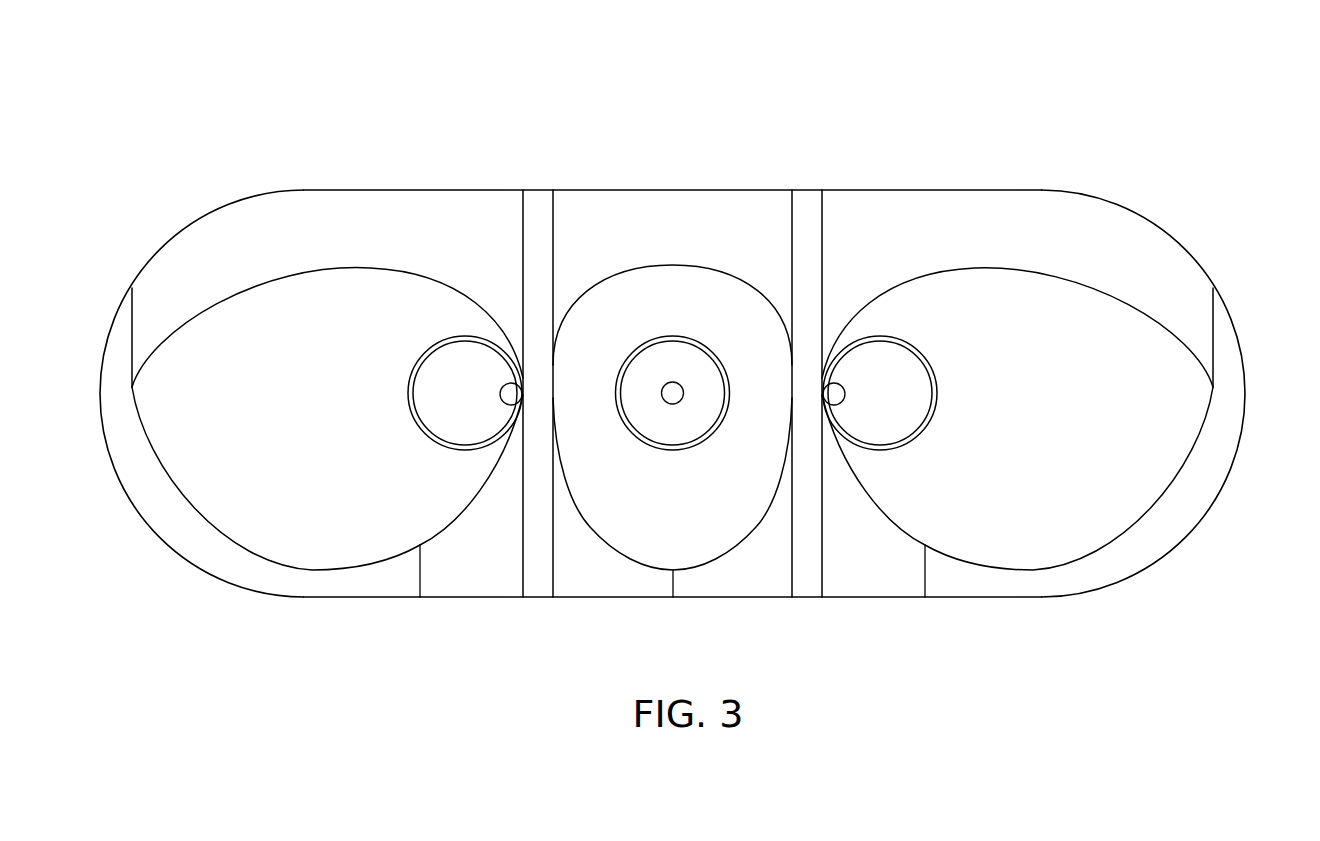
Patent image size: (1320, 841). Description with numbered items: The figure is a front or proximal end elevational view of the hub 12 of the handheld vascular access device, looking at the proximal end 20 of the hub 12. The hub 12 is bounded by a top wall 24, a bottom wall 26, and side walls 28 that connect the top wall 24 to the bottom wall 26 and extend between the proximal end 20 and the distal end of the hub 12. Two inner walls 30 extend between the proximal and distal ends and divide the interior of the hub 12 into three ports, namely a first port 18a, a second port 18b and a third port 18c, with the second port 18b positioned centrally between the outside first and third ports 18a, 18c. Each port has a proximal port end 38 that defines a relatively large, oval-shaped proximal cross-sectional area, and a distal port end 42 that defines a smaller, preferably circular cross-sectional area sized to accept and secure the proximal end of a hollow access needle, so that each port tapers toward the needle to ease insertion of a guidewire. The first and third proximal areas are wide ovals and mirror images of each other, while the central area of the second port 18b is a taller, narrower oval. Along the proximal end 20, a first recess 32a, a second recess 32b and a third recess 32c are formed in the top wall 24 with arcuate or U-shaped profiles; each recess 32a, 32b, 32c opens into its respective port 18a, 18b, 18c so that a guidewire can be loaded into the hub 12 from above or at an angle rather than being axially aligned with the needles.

The hub 12 is at (768, 120).
The first port 18a is at (205, 515).
The second port 18b is at (728, 522).
The third port 18c is at (1060, 535).
The proximal end 20 is at (1222, 381).
The top wall 24 is at (615, 190).
The bottom wall 26 is at (893, 598).
The side walls 28 is at (98, 404).
The inner wall 30 is at (545, 200).
The first recess 32a is at (310, 205).
The second recess 32b is at (658, 205).
The third recess 32c is at (986, 205).
The proximal port end 38 is at (155, 465).
The distal port end 42 is at (427, 396).